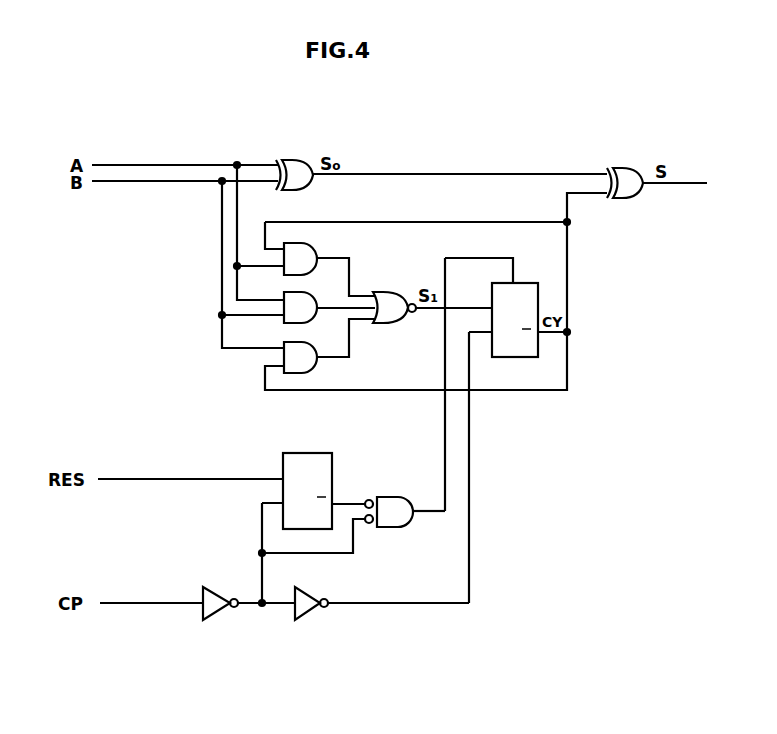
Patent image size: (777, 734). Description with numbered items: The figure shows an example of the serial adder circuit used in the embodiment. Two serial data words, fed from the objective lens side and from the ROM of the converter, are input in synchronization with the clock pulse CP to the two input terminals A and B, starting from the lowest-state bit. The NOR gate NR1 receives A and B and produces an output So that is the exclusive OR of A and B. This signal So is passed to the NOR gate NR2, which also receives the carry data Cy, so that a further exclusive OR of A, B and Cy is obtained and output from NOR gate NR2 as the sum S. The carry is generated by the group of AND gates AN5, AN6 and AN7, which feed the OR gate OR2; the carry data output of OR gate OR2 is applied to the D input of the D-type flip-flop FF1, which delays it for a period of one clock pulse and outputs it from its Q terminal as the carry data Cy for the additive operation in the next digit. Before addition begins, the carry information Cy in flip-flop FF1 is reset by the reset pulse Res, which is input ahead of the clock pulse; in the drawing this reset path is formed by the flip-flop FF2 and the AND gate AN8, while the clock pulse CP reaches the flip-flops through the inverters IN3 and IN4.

The NOR gate NR1 is at (299, 160).
The NOR gate NR2 is at (638, 168).
The AND gate AN5 is at (298, 254).
The AND gate AN6 is at (300, 304).
The AND gate AN7 is at (300, 354).
The AND gate AN8 is at (394, 507).
The OR gate OR2 is at (388, 300).
The D-type flip-flop FF1 is at (524, 283).
The flip-flop FF2 is at (330, 455).
The inverter IN3 is at (220, 614).
The inverter IN4 is at (306, 609).